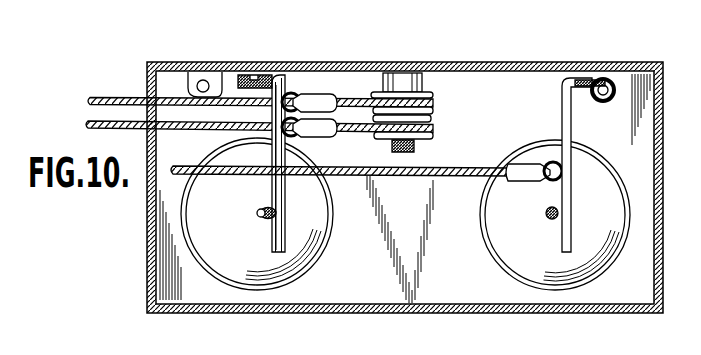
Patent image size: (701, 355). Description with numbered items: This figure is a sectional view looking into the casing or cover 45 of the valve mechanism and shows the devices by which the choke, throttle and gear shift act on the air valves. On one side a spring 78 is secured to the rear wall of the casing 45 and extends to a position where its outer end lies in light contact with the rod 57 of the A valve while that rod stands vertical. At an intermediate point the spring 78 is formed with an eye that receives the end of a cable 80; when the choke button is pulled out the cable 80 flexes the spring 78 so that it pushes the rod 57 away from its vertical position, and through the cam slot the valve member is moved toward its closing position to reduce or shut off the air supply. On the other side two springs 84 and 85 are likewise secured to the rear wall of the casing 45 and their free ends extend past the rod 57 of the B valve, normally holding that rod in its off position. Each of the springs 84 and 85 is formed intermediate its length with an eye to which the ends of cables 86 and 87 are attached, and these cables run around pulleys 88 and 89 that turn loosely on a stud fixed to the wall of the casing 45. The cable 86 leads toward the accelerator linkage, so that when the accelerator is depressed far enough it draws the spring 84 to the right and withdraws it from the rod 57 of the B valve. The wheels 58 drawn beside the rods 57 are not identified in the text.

The casing 45 is at (521, 67).
The rod 57 is at (265, 221).
The wheel 58 is at (302, 263).
The spring 78 is at (561, 125).
The cable 80 is at (452, 177).
The spring 84 is at (285, 208).
The spring 85 is at (273, 193).
The cable 86 is at (89, 122).
The cable 87 is at (113, 97).
The pulley 88 is at (432, 96).
The pulley 89 is at (420, 138).